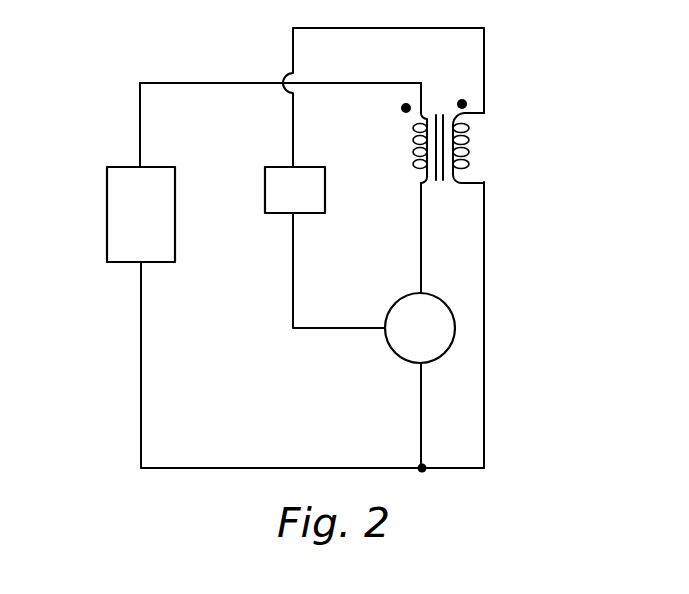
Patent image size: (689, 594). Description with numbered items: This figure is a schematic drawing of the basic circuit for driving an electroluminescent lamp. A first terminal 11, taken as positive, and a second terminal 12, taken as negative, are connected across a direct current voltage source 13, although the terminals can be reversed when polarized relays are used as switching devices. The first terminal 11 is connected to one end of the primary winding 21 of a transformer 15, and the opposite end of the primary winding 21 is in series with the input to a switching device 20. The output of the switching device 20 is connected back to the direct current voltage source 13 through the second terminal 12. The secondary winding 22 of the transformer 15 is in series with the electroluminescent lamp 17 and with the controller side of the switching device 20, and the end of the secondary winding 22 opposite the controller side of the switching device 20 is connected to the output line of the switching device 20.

The first terminal 11 is at (133, 166).
The second terminal 12 is at (133, 263).
The direct current voltage source 13 is at (107, 216).
The transformer 15 is at (464, 142).
The electroluminescent lamp 17 is at (278, 167).
The switching device 20 is at (400, 357).
The primary winding 21 is at (414, 167).
The secondary winding 22 is at (470, 137).